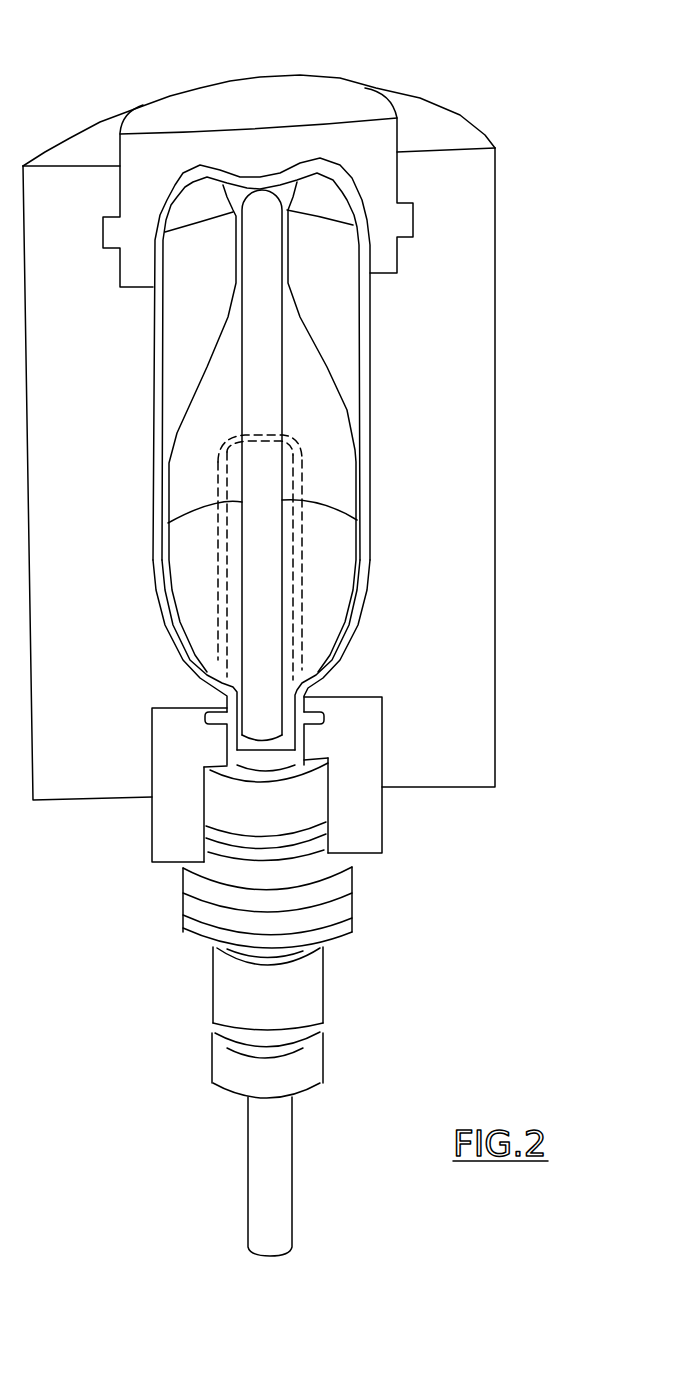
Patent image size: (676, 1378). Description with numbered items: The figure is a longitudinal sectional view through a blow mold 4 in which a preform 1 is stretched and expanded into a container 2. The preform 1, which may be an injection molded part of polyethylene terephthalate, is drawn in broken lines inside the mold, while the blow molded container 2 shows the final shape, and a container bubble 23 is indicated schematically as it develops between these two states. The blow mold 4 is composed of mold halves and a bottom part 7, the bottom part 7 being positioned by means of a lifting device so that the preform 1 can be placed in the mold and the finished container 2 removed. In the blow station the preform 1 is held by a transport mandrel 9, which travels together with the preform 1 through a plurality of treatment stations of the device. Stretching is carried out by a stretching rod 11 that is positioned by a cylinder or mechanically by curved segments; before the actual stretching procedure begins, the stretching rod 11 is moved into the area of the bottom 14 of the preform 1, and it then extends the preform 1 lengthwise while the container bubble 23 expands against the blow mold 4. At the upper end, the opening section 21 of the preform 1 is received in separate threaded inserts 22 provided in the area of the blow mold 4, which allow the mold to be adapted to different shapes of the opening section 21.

The preform 1 is at (404, 465).
The container 2 is at (378, 454).
The blow mold 4 is at (311, 437).
The bottom part 7 is at (340, 93).
The transport mandrel 9 is at (315, 982).
The stretching rod 11 is at (195, 1176).
The bottom 14 is at (412, 535).
The opening section 21 is at (411, 741).
The threaded inserts 22 is at (361, 779).
The container bubble 23 is at (395, 427).